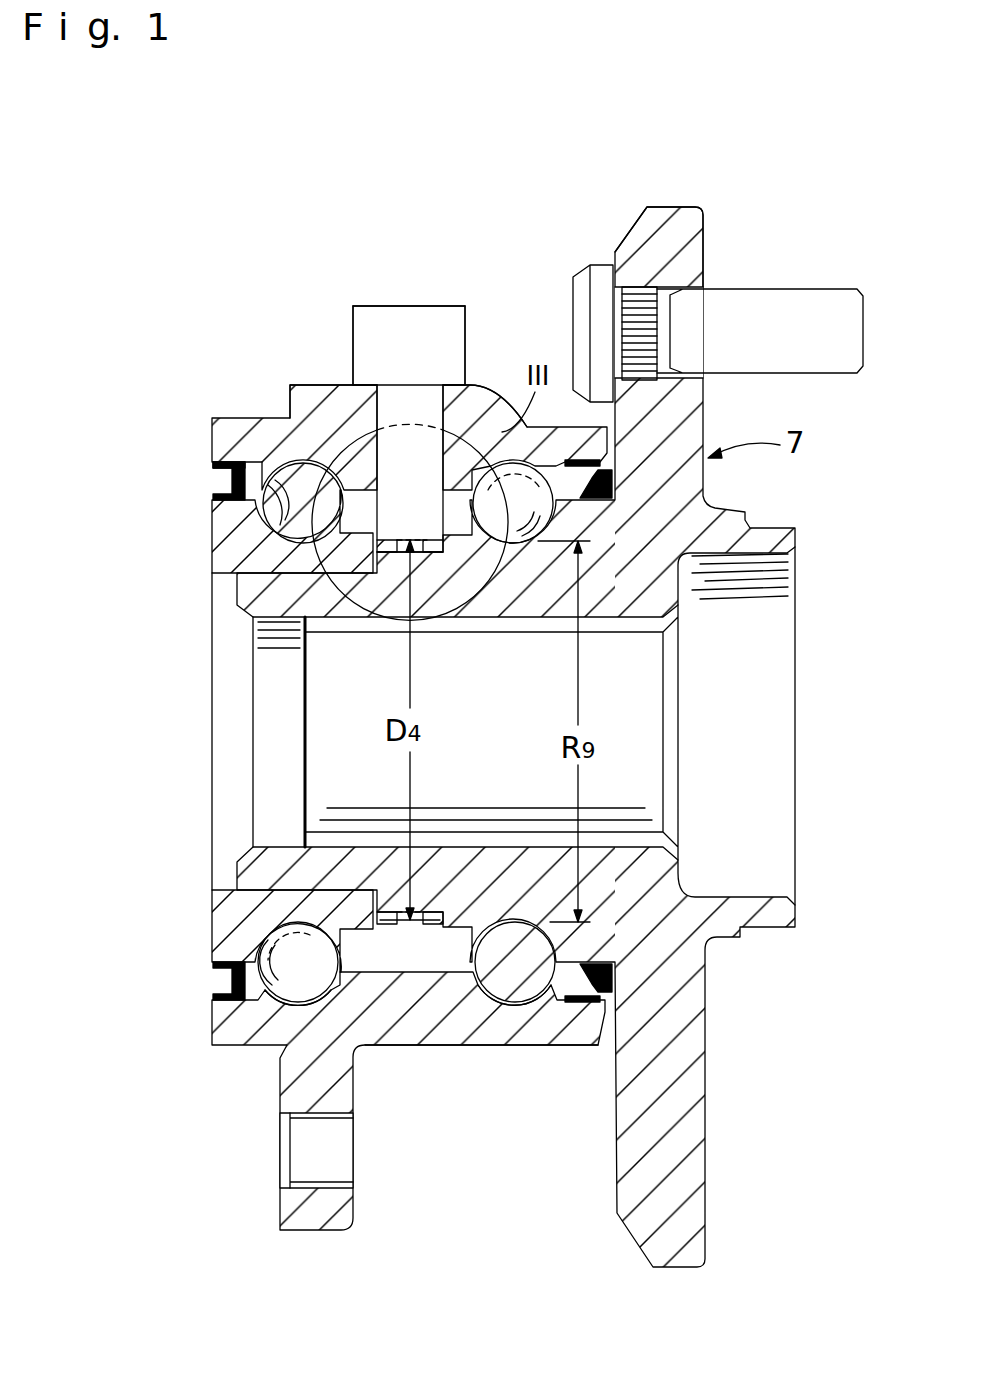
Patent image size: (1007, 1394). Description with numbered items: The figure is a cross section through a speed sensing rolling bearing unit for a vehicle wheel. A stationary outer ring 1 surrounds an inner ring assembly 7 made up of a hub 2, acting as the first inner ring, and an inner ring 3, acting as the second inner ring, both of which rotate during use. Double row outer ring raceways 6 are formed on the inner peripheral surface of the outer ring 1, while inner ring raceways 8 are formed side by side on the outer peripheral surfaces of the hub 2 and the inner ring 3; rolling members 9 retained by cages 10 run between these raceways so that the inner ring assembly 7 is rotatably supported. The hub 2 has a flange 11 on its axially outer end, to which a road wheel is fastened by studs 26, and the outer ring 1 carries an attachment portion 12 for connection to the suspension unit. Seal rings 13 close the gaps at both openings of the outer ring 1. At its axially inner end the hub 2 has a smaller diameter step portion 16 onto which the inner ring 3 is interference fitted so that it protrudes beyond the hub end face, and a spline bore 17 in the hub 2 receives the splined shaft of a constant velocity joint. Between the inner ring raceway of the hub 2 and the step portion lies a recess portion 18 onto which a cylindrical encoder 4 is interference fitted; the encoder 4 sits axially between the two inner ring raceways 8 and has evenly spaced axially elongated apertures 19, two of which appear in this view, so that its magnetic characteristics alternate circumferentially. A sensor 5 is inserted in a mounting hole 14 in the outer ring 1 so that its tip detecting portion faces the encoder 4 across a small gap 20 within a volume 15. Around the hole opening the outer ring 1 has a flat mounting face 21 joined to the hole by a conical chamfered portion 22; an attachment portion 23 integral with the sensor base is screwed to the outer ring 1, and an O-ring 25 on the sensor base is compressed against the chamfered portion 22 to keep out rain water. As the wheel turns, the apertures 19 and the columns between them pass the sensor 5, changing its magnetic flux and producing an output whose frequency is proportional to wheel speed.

The outer ring 1 is at (240, 445).
The hub 2 is at (843, 672).
The inner ring 3 is at (225, 535).
The encoder 4 is at (330, 622).
The sensor 5 is at (406, 367).
The outer ring raceways 6 is at (288, 1002).
The inner ring assembly 7 is at (502, 703).
The inner ring raceways 8 is at (517, 924).
The rolling members 9 is at (240, 458).
The cages 10 is at (385, 1058).
The flange 11 is at (670, 214).
The attachment portion 12 is at (330, 1232).
The seal rings 13 is at (195, 506).
The mounting hole 14 is at (375, 415).
The volume 15 is at (355, 500).
The smaller diameter step portion 16 is at (257, 890).
The spline bore 17 is at (527, 617).
The recess portion 18 is at (405, 555).
The apertures 19 is at (420, 555).
The small gap 20 is at (447, 540).
The flat mounting face 21 is at (345, 393).
The chamfered portion 22 is at (450, 395).
The attachment portion 23 is at (407, 327).
The O-ring 25 is at (353, 377).
The studs 26 is at (768, 318).